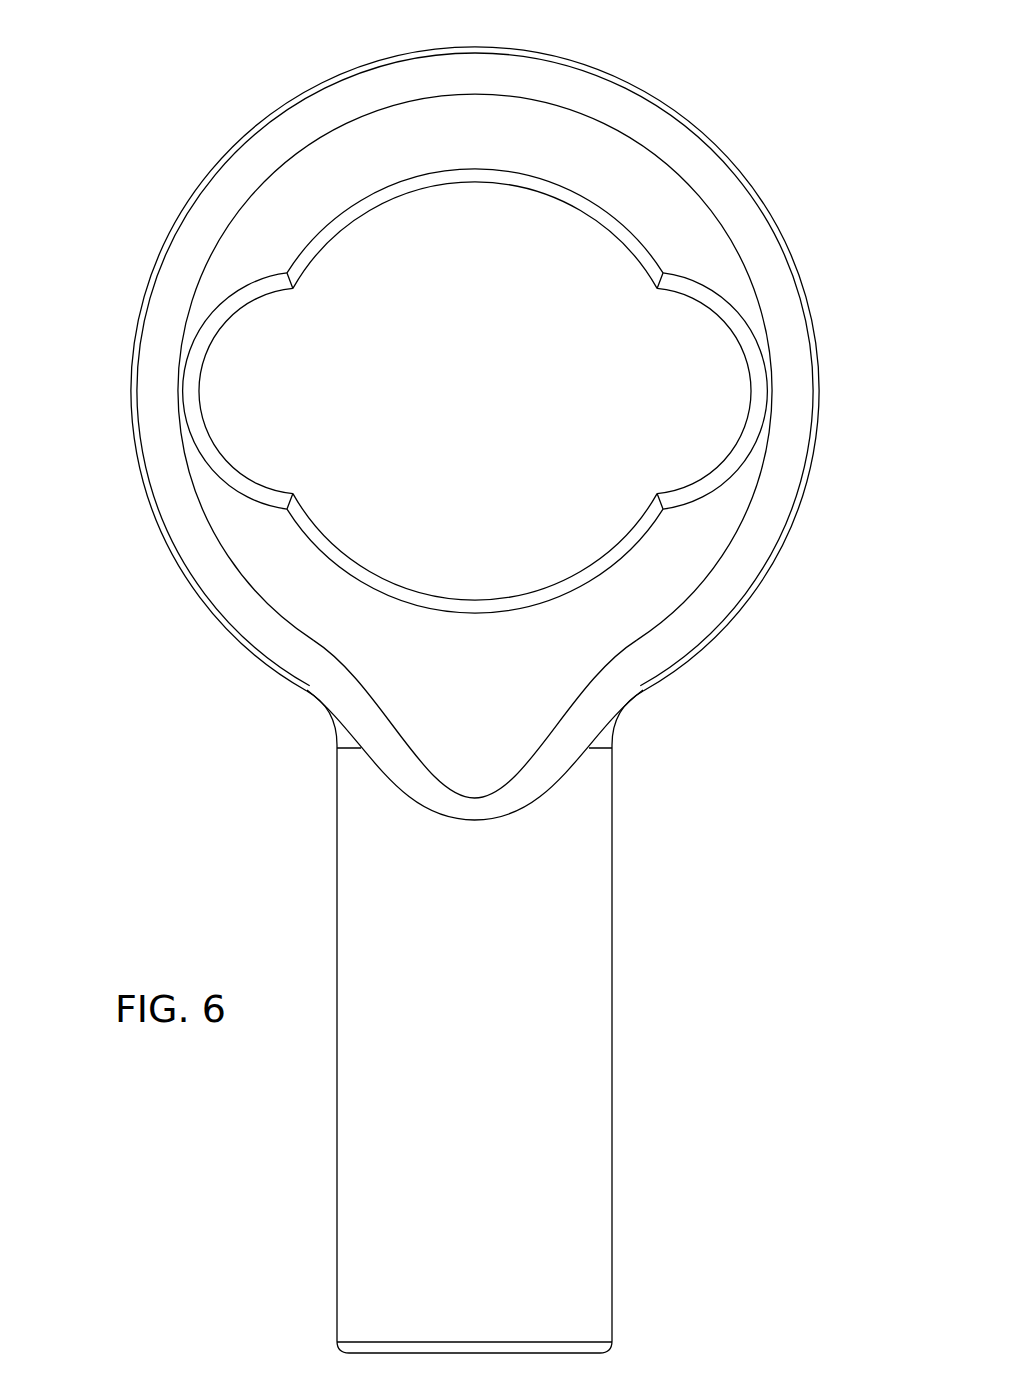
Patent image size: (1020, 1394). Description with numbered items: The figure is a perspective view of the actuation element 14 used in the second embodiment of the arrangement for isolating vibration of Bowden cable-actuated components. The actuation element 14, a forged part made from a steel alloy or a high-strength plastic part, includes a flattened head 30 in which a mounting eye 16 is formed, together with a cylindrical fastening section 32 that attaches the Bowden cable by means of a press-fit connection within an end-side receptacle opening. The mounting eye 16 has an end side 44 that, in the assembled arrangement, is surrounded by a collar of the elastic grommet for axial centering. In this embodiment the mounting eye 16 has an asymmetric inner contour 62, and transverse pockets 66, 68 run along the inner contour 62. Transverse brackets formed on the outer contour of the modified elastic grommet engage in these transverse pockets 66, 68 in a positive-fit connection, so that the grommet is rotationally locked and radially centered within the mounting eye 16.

The actuation element 14 is at (168, 1133).
The mounting eye 16 is at (382, 251).
The flattened head 30 is at (493, 705).
The cylindrical fastening section 32 is at (612, 1080).
The end side 44 is at (600, 165).
The inner contour 62 is at (372, 580).
The transverse pocket 66 is at (192, 392).
The transverse pocket 68 is at (752, 373).